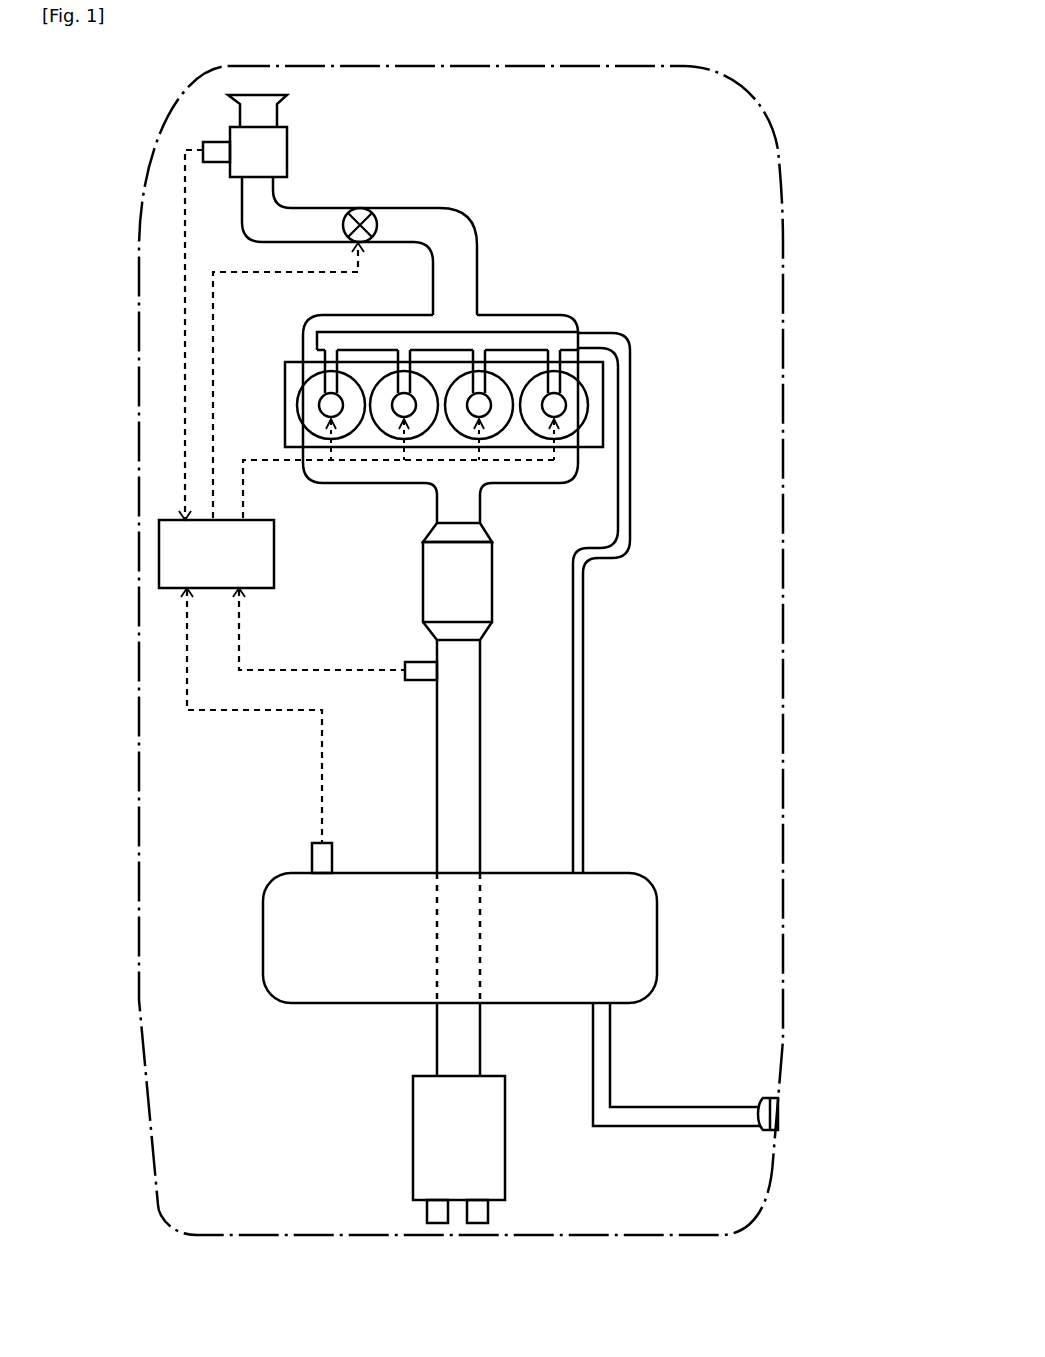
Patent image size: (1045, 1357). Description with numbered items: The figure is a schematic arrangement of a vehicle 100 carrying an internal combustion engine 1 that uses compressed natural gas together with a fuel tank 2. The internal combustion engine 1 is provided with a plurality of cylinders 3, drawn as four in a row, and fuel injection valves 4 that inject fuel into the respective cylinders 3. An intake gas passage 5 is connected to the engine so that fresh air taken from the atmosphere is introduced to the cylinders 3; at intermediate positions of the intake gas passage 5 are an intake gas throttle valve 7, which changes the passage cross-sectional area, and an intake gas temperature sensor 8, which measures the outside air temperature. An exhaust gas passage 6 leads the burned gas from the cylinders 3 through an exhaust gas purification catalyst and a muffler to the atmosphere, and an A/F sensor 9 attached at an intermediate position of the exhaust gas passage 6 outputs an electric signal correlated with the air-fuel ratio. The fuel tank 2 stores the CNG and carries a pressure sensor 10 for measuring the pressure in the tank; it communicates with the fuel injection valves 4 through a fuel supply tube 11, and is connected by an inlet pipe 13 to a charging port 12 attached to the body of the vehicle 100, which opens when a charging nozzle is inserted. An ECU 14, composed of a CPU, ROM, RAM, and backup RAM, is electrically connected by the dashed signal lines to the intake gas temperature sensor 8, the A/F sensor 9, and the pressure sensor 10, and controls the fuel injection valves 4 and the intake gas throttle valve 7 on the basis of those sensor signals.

The vehicle 100 is at (789, 137).
The internal combustion engine 1 is at (290, 363).
The fuel tank 2 is at (330, 1003).
The cylinders 3 is at (302, 408).
The fuel injection valves 4 is at (560, 405).
The intake gas passage 5 is at (478, 252).
The exhaust gas passage 6 is at (443, 768).
The intake gas throttle valve 7 is at (360, 212).
The intake gas temperature sensor 8 is at (212, 143).
The A/F sensor 9 is at (420, 663).
The pressure sensor 10 is at (312, 850).
The fuel supply tube 11 is at (582, 687).
The charging port 12 is at (780, 1117).
The inlet pipe 13 is at (668, 1110).
The ECU 14 is at (160, 550).